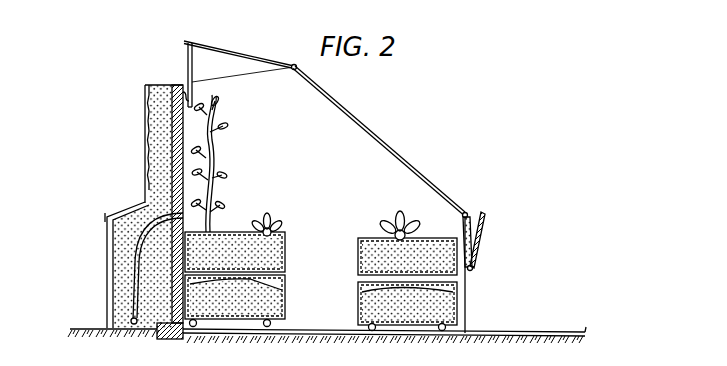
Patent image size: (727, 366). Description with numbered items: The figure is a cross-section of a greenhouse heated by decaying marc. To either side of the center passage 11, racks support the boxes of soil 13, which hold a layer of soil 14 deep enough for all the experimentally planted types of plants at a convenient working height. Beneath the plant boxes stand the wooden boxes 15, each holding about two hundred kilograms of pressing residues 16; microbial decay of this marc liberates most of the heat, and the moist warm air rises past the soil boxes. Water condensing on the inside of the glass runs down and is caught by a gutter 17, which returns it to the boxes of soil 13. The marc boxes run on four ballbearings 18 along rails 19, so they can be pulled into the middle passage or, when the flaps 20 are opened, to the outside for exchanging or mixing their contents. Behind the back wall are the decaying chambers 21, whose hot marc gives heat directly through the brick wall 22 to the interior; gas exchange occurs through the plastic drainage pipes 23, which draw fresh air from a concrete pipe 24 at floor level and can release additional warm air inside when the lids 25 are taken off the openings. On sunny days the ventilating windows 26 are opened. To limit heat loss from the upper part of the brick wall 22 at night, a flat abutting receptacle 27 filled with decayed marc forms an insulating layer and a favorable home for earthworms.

The center passage 11 is at (327, 283).
The boxes of soil 13 is at (358, 243).
The layer of soil 14 is at (266, 250).
The wooden boxes 15 is at (357, 305).
The pressing residues 16 is at (237, 307).
The gutter 17 is at (193, 98).
The ballbearings 18 is at (190, 330).
The rails 19 is at (517, 332).
The flaps 20 is at (485, 220).
The decaying chambers 21 is at (120, 275).
The brick wall 22 is at (173, 165).
The plastic drainage pipes 23 is at (135, 247).
The concrete pipe 24 is at (128, 320).
The lids 25 is at (190, 217).
The ventilating windows 26 is at (240, 53).
The flat abutting receptacle 27 is at (157, 120).